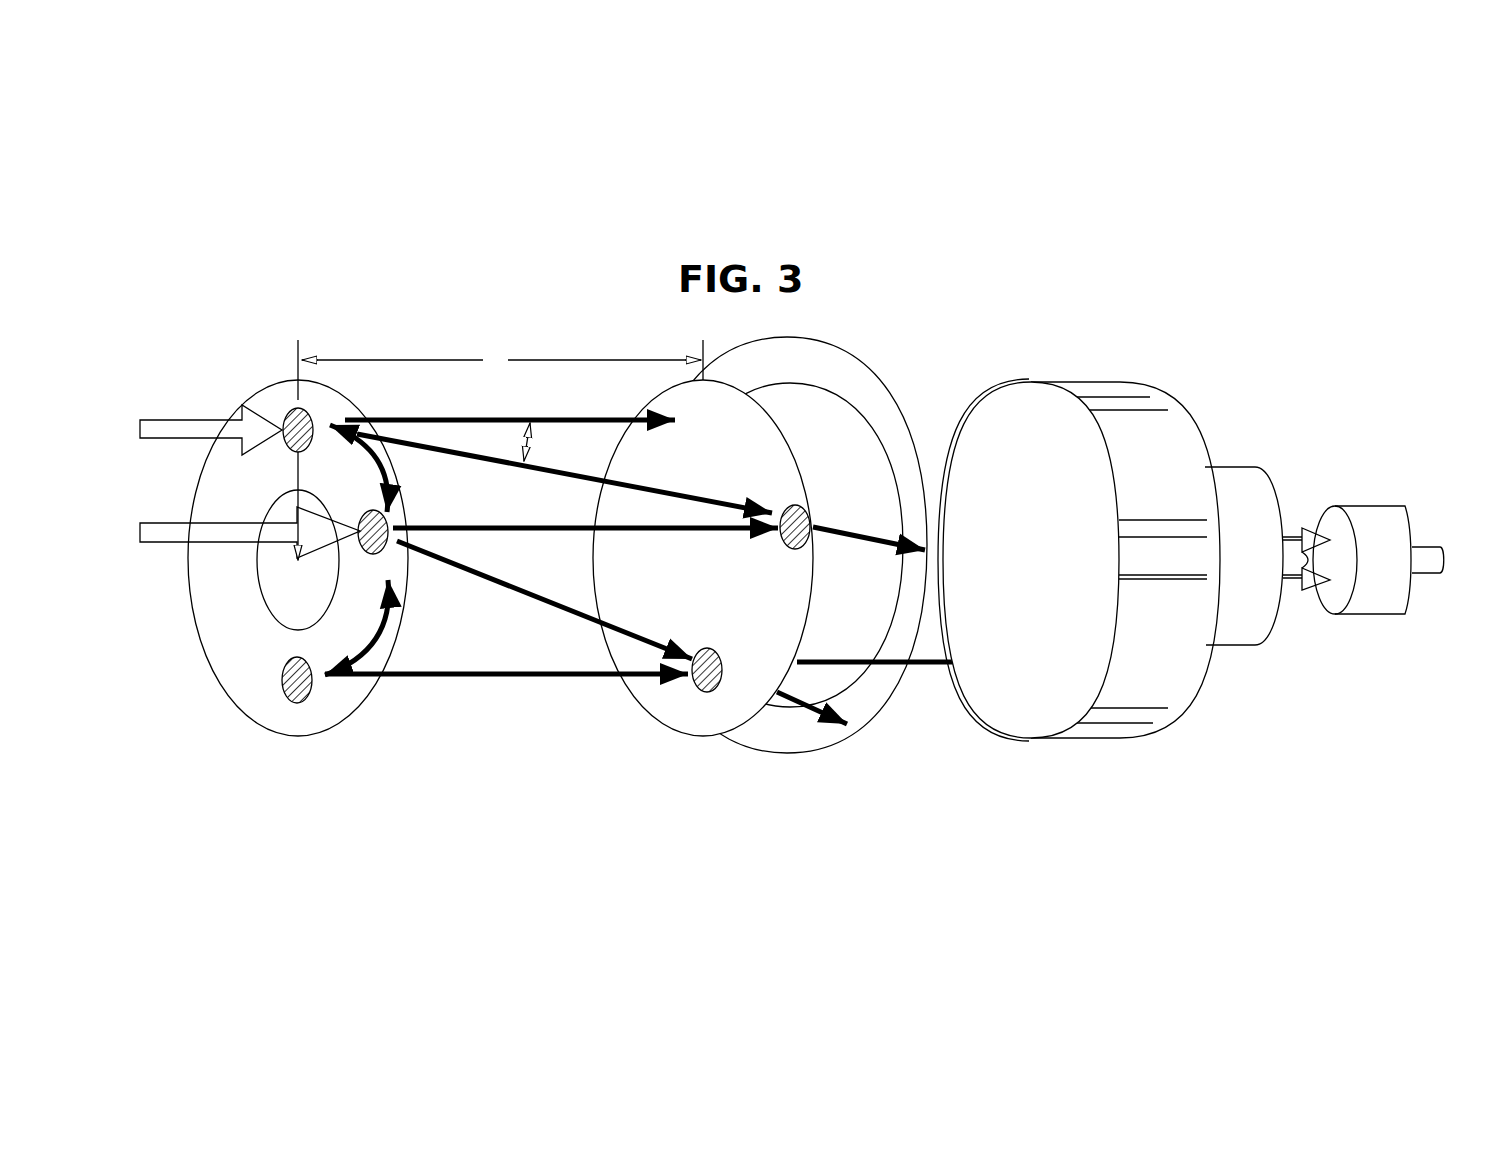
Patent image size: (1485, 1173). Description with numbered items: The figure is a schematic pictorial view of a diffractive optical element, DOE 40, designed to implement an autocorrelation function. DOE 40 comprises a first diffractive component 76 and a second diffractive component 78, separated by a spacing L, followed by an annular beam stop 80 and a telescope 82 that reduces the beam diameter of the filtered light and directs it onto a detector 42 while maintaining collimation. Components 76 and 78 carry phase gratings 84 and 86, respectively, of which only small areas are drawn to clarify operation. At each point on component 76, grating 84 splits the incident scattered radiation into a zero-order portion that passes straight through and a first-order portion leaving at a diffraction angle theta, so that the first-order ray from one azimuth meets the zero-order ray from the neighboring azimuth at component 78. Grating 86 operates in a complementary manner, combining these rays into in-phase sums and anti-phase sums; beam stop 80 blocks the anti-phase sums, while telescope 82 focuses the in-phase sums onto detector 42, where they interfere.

The diffractive optical element 40 is at (1115, 322).
The detector 42 is at (1358, 505).
The first diffractive component 76 is at (218, 682).
The second diffractive component 78 is at (625, 697).
The annular beam stop 80 is at (872, 718).
The telescope 82 is at (1077, 742).
The phase grating 84 is at (292, 408).
The phase grating 86 is at (812, 523).